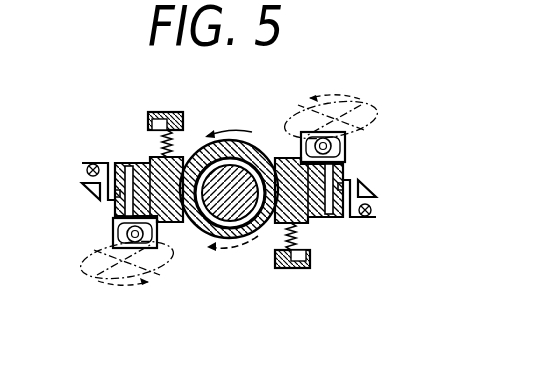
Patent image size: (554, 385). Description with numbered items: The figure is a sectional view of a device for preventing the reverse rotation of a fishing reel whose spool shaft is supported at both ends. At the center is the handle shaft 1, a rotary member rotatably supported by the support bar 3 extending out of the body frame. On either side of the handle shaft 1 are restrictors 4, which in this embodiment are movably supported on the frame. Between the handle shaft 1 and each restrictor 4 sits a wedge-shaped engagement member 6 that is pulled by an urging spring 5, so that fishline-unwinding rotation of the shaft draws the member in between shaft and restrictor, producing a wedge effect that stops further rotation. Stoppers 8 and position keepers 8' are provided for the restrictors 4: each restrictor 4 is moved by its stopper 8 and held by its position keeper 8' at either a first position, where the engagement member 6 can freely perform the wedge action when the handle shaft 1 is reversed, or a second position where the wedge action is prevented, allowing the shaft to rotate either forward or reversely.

The handle shaft 1 is at (199, 216).
The support bar 3 is at (251, 214).
The restrictor 4 is at (132, 161).
The urging spring 5 is at (178, 131).
The wedge-shaped engagement member 6 is at (172, 222).
The stopper 8 is at (229, 190).
The position keeper 8' is at (233, 190).